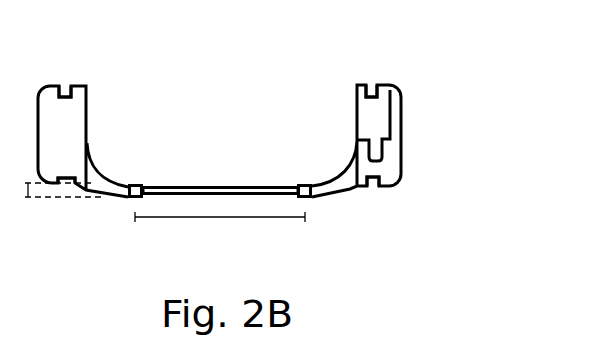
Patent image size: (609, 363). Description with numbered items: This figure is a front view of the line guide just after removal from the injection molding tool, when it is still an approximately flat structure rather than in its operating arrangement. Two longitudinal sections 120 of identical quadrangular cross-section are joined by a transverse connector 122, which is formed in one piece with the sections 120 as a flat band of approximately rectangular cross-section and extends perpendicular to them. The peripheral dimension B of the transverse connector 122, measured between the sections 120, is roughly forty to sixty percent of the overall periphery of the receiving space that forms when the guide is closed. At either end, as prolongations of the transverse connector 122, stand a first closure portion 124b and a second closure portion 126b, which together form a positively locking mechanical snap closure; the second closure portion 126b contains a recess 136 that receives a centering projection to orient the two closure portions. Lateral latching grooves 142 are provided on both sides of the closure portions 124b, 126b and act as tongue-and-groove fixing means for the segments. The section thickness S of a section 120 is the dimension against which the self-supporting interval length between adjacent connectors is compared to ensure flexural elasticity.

The section 120 is at (135, 183).
The transverse connector 122 is at (210, 186).
The first closure portion 124b is at (53, 118).
The second closure portion 126b is at (392, 154).
The recess 136 is at (365, 118).
The lateral latching groove 142 is at (67, 88).
The section thickness S is at (28, 183).
The peripheral dimension B is at (220, 218).